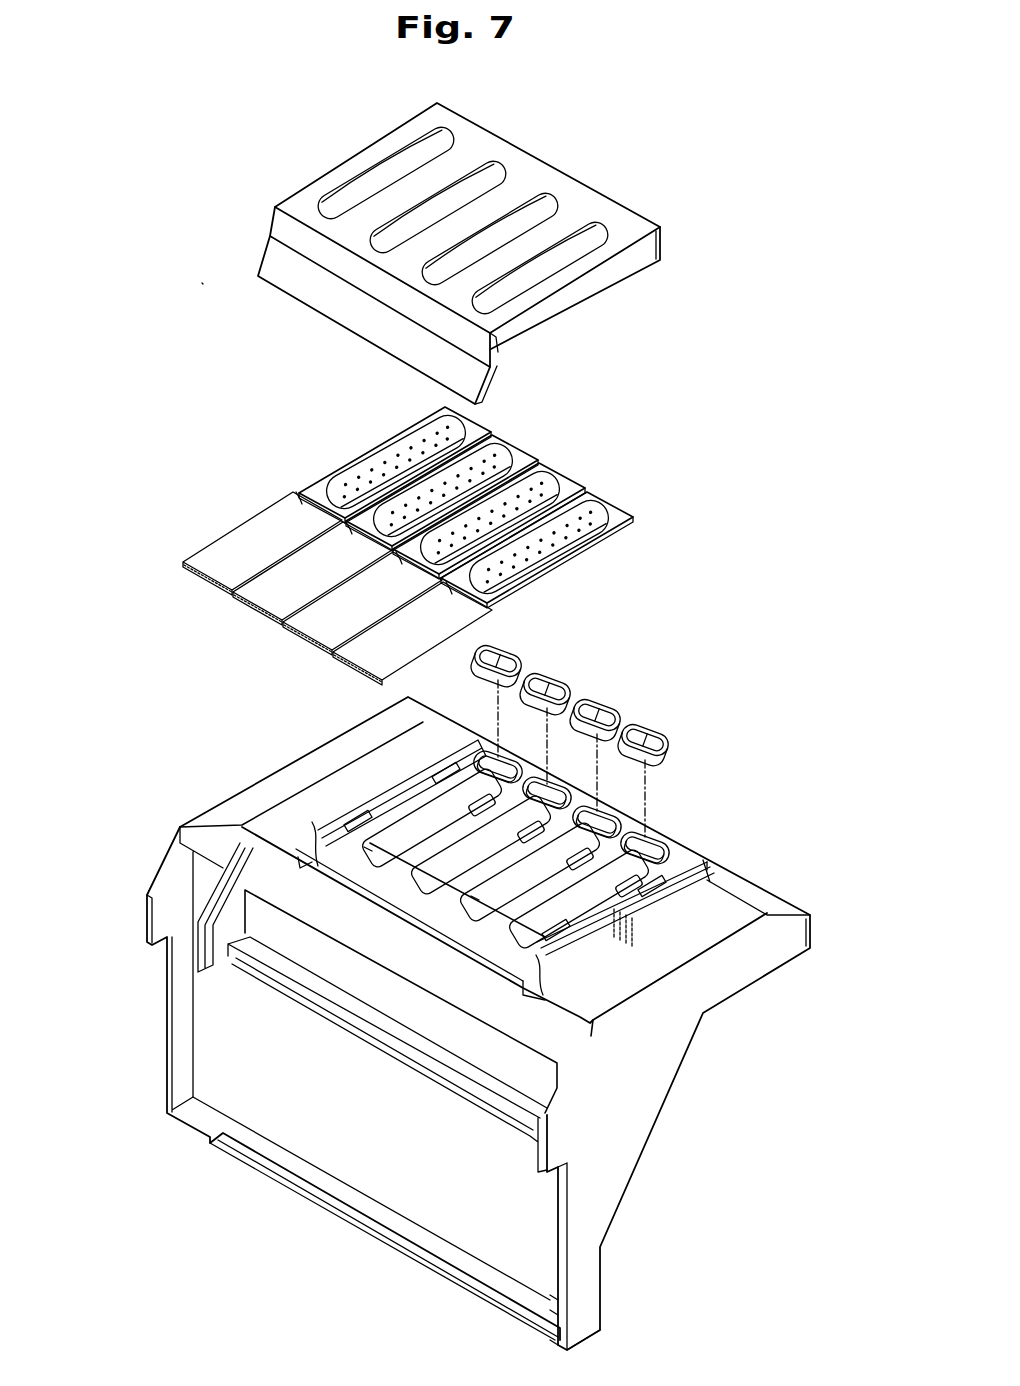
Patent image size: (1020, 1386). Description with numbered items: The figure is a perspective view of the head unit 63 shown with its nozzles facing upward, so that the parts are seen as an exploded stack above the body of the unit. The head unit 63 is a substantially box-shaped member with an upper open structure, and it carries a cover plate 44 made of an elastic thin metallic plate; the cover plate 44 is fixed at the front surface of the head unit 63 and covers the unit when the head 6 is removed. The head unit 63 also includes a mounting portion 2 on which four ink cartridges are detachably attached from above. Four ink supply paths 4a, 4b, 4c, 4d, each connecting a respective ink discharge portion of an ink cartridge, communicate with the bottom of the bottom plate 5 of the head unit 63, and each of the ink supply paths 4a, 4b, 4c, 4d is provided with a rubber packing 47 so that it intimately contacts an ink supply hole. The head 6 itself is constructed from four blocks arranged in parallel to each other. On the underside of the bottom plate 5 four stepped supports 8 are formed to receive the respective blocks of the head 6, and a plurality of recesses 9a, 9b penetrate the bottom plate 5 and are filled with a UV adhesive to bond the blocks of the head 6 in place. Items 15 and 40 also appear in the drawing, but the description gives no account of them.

The mounting portion 2 is at (653, 1025).
The ink supply path 4a is at (505, 767).
The ink supply path 4b is at (553, 793).
The ink supply path 4c is at (600, 822).
The ink supply path 4d is at (653, 848).
The bottom plate 5 is at (420, 903).
The head 6 is at (556, 417).
The stepped support 8 is at (368, 848).
The recess 9a is at (490, 807).
The recess 9b is at (352, 820).
The filter 15 is at (608, 508).
The sealing tape 40 is at (237, 542).
The cover plate 44 is at (540, 177).
The rubber packing 47 is at (568, 680).
The head unit 63 is at (203, 284).